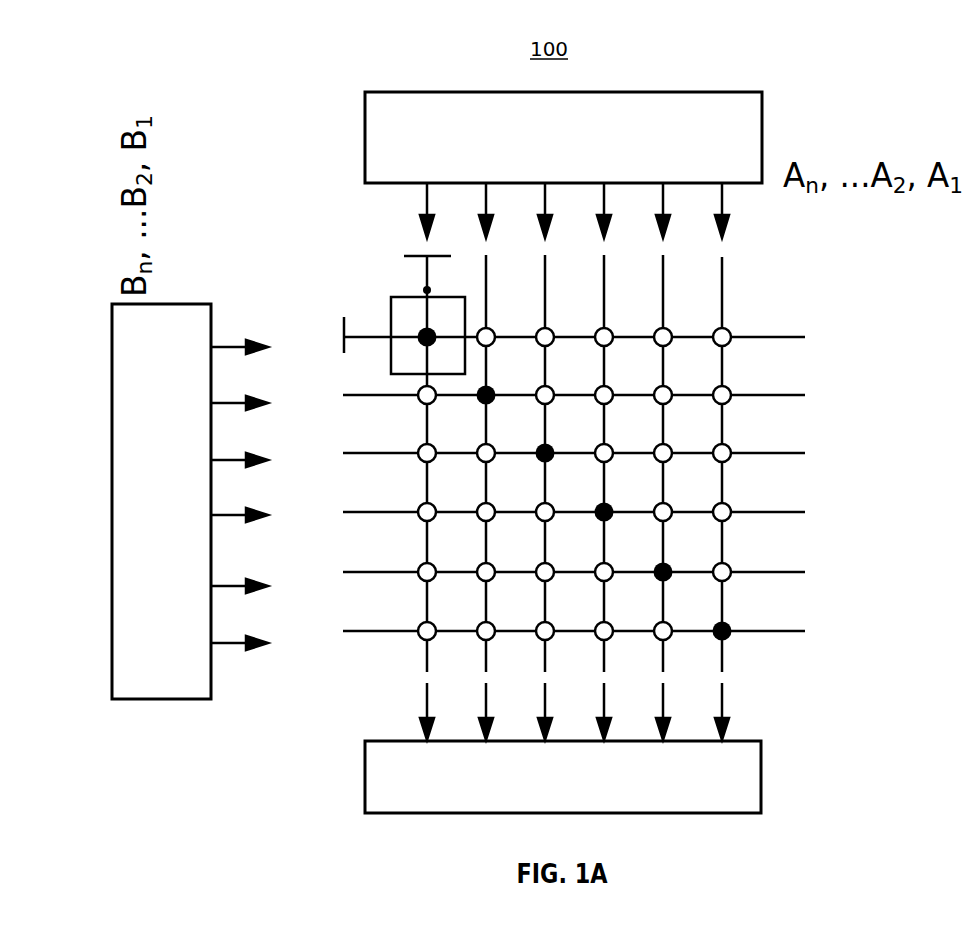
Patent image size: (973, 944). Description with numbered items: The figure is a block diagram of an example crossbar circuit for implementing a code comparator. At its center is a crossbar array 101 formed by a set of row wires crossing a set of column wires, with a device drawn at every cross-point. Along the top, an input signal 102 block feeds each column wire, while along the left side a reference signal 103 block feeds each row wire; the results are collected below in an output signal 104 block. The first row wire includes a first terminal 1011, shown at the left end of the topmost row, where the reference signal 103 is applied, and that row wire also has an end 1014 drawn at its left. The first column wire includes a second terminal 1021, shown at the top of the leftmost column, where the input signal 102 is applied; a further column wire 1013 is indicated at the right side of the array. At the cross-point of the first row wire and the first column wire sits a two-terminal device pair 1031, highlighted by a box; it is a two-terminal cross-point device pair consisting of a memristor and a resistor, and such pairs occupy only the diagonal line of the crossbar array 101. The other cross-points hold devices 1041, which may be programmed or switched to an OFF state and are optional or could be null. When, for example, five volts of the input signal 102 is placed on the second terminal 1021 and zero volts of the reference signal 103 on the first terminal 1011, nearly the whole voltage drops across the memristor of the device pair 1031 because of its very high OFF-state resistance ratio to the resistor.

The crossbar array 101 is at (562, 429).
The input signal 102 is at (763, 132).
The reference signal 103 is at (163, 304).
The output signal unit 104 is at (762, 758).
The first terminal 1011 is at (363, 335).
The column line 1013 is at (687, 267).
The row line terminal 1014 is at (310, 347).
The second terminal 1021 is at (423, 290).
The two-terminal device pair 1031 is at (418, 345).
The device 1041 is at (427, 405).